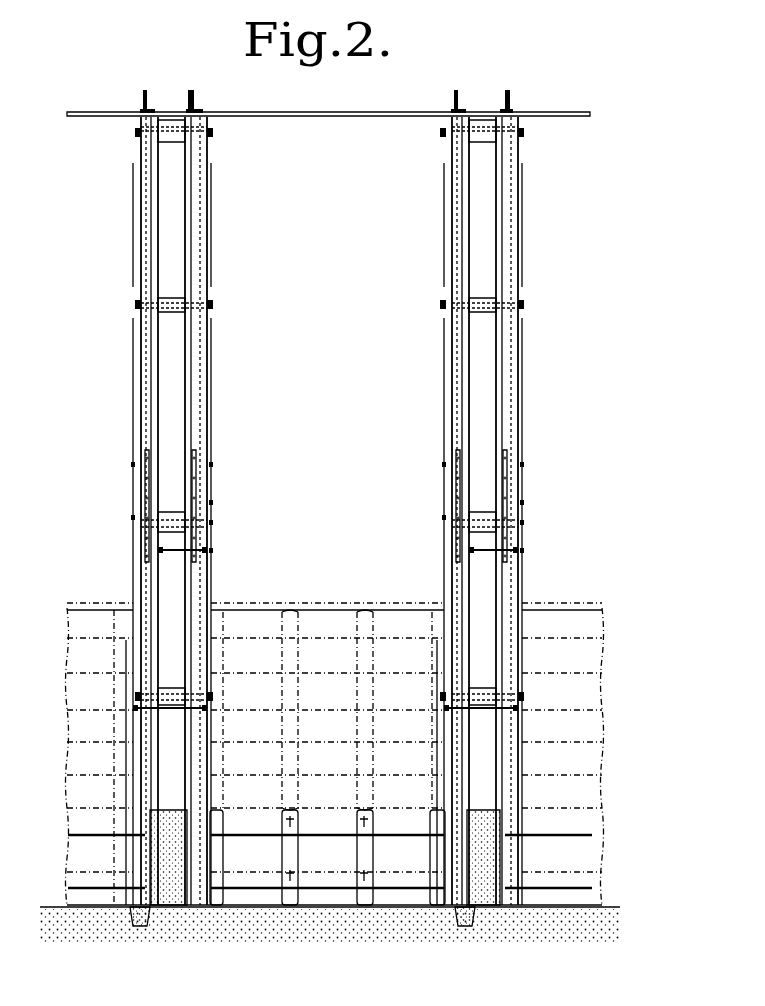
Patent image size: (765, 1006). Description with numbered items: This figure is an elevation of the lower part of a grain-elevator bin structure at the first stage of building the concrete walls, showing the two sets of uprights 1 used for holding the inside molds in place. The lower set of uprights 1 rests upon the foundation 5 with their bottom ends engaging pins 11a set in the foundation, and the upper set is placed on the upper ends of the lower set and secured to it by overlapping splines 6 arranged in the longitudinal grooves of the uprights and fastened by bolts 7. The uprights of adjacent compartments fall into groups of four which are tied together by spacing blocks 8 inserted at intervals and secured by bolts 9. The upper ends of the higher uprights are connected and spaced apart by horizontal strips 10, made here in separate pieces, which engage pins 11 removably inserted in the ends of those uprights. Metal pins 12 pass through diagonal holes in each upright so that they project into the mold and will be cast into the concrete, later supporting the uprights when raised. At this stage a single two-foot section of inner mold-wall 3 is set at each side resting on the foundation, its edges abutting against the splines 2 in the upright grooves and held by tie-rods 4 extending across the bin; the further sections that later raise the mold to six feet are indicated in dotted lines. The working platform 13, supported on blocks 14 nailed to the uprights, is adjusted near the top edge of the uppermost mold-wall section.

The uprights 1 is at (140, 197).
The splines 2 is at (151, 220).
The inner mold-walls 3 is at (432, 822).
The tie-rods 4 is at (90, 833).
The foundation 5 is at (70, 907).
The overlapping splines 6 is at (145, 485).
The bolts 7 is at (131, 517).
The spacing blocks 8 is at (170, 142).
The bolts 9 is at (214, 133).
The horizontal strips 10 is at (110, 114).
The pins 11 is at (190, 102).
The pins 11a is at (148, 912).
The metal pins 12 is at (180, 552).
The working platform 13 is at (110, 602).
The blocks 14 is at (280, 652).